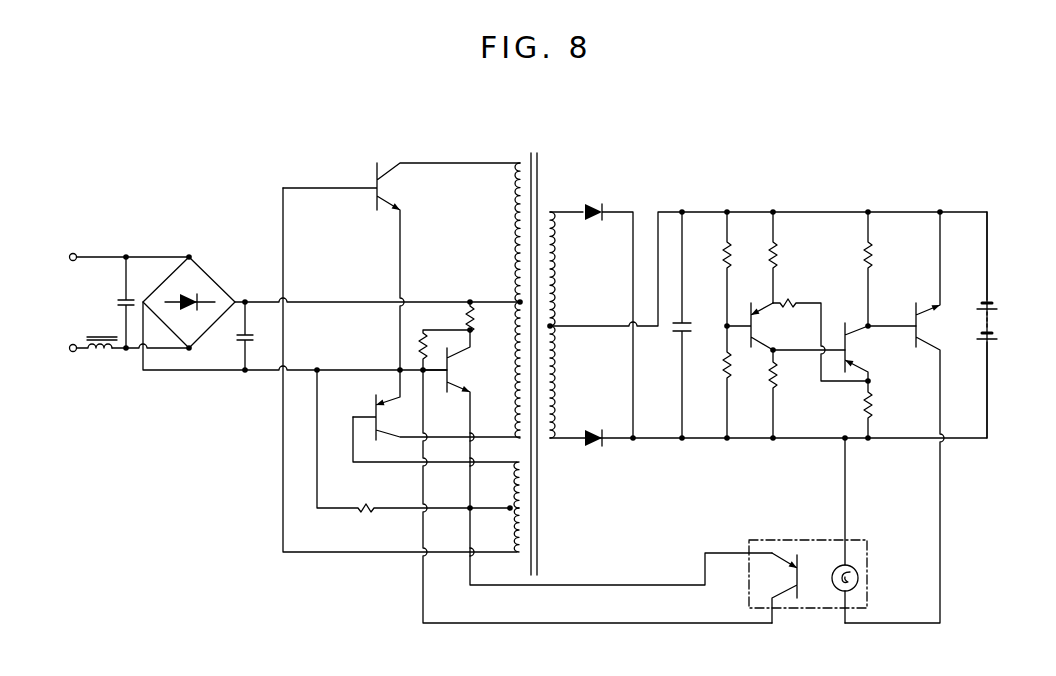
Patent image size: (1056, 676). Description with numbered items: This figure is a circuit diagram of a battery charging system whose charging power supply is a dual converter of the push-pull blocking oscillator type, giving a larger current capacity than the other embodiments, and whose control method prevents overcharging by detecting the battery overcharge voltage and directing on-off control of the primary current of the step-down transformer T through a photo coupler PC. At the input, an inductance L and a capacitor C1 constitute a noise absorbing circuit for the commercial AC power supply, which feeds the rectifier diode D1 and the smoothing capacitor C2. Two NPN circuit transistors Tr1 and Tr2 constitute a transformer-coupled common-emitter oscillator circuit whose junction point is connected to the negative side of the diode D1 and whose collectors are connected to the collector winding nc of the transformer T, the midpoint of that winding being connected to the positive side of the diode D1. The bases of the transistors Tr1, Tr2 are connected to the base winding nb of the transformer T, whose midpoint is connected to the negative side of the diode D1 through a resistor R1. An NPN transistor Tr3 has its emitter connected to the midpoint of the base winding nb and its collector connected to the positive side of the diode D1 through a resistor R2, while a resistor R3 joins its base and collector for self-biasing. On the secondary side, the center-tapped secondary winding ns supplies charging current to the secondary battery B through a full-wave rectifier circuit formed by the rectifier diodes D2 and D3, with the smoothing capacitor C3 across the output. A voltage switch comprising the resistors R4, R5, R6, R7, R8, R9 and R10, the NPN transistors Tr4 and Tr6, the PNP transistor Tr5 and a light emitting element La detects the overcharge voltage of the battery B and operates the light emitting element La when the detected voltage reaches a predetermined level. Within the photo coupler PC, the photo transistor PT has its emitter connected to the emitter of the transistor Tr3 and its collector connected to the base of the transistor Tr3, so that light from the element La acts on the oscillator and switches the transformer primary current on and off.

The capacitor C1 is at (116, 302).
The inductance L is at (99, 352).
The rectifier diode D1 is at (193, 292).
The smoothing capacitor C2 is at (254, 339).
The circuit transistor Tr1 is at (378, 187).
The circuit transistor Tr2 is at (377, 418).
The NPN transistor Tr3 is at (449, 372).
The resistor R1 is at (366, 503).
The resistor R2 is at (472, 320).
The resistor R3 is at (421, 338).
The transformer T is at (534, 152).
The collector winding nc is at (512, 219).
The base winding nb is at (510, 485).
The secondary winding ns is at (558, 262).
The rectifier diode D2 is at (592, 206).
The rectifier diode D3 is at (592, 431).
The smoothing capacitor C3 is at (692, 330).
The resistor R4 is at (723, 261).
The resistor R5 is at (729, 370).
The resistor R6 is at (768, 256).
The resistor R7 is at (780, 378).
The resistor R8 is at (794, 300).
The resistor R9 is at (872, 406).
The resistor R10 is at (872, 258).
The NPN transistor Tr4 is at (753, 330).
The PNP transistor Tr5 is at (848, 355).
The NPN transistor Tr6 is at (918, 330).
The secondary battery B is at (995, 325).
The photo coupler PC is at (812, 540).
The photo transistor PT is at (794, 580).
The light emitting element La is at (858, 578).